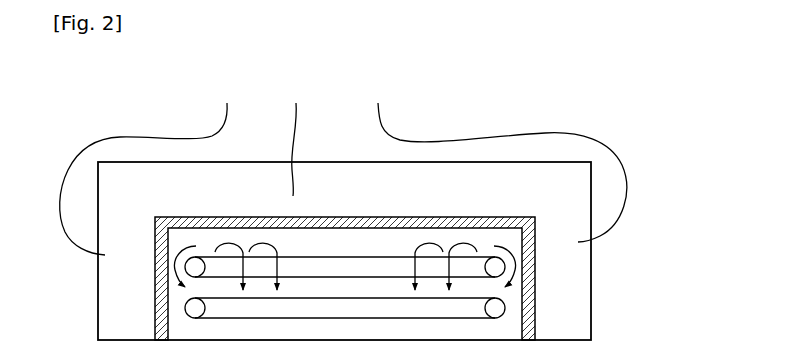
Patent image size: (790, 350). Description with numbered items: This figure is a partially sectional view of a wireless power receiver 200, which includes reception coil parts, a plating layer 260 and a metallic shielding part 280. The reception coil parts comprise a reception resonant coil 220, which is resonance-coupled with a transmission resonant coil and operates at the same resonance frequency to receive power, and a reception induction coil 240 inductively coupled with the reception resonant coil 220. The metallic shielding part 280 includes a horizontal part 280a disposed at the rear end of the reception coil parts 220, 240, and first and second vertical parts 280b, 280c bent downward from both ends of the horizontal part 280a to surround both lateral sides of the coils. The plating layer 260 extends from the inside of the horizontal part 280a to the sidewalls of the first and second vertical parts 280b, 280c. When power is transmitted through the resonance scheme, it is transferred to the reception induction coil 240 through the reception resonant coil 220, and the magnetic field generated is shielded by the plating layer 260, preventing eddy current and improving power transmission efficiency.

The wireless power receiver 200 is at (129, 121).
The reception resonant coil 220 is at (505, 305).
The reception induction coil 240 is at (505, 262).
The plating layer 260 is at (346, 217).
The metallic shielding part 280 is at (385, 82).
The horizontal part 280a is at (296, 140).
The first vertical part 280b is at (152, 169).
The second vertical part 280c is at (491, 163).